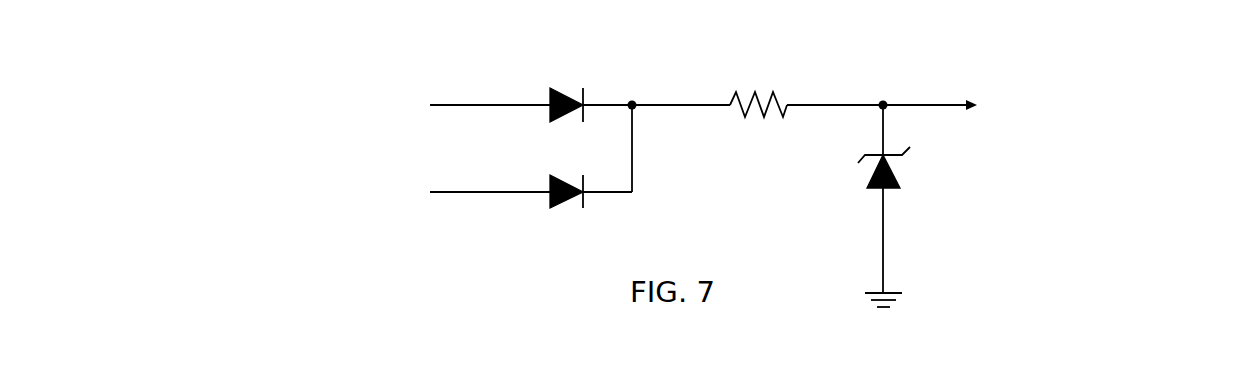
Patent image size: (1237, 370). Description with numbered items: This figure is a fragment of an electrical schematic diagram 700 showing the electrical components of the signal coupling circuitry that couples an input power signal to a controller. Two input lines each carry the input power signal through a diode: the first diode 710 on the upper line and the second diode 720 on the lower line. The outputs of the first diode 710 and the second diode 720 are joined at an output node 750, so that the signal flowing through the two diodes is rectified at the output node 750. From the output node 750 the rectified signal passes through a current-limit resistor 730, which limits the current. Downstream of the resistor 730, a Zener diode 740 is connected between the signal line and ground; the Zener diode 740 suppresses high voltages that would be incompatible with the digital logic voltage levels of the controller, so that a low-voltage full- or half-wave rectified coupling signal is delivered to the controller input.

The electrical schematic diagram 700 is at (312, 92).
The first diode 710 is at (555, 88).
The second diode 720 is at (555, 176).
The current-limit resistor 730 is at (776, 92).
The Zener diode 740 is at (900, 178).
The output node 750 is at (634, 100).